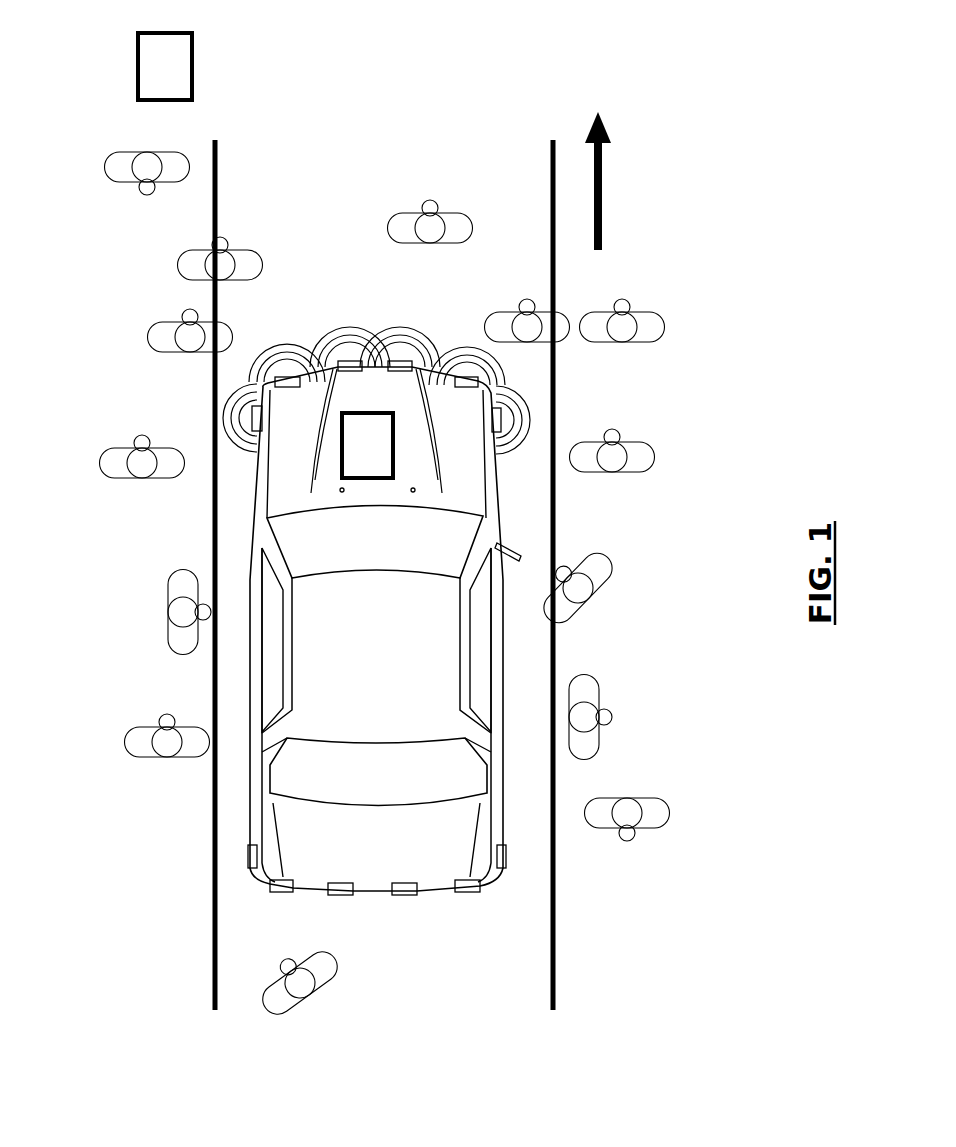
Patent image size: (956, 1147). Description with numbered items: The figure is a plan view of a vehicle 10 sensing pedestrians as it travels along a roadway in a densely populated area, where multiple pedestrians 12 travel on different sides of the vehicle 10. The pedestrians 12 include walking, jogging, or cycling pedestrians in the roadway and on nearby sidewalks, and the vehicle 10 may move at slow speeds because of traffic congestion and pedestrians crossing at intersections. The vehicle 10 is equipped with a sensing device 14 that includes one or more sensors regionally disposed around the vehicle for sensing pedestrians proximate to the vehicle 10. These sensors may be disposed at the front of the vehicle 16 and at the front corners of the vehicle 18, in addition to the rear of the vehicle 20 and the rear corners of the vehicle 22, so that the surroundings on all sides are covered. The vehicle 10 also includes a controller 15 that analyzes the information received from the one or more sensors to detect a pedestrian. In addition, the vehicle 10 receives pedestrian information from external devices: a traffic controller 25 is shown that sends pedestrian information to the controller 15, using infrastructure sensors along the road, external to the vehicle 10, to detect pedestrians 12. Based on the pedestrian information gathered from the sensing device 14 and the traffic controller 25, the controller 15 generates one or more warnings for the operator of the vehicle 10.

The vehicle 10 is at (372, 670).
The pedestrians 12 is at (351, 586).
The sensing device 14 is at (326, 280).
The controller 15 is at (367, 445).
The front of the vehicle 16 is at (444, 286).
The front corners of the vehicle 18 is at (572, 405).
The rear of the vehicle 20 is at (381, 949).
The rear corners of the vehicle 22 is at (199, 911).
The traffic controller 25 is at (165, 66).